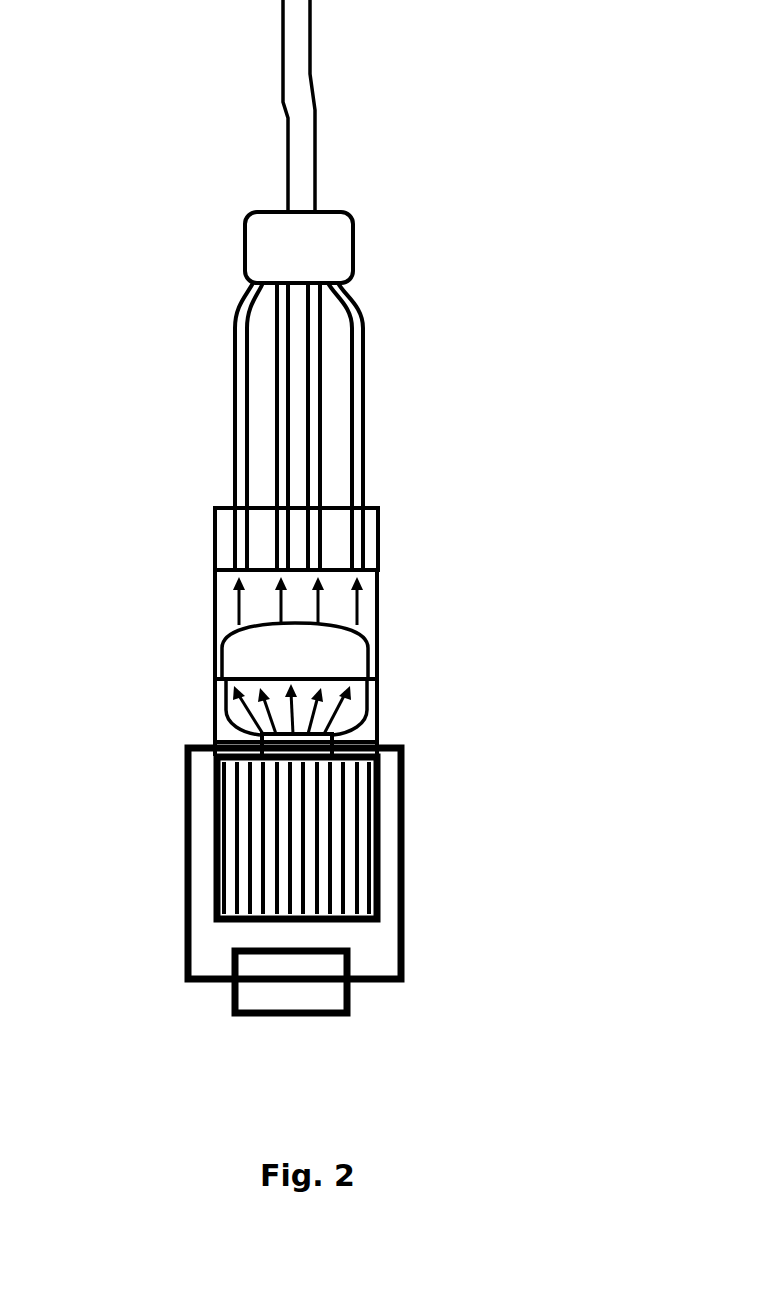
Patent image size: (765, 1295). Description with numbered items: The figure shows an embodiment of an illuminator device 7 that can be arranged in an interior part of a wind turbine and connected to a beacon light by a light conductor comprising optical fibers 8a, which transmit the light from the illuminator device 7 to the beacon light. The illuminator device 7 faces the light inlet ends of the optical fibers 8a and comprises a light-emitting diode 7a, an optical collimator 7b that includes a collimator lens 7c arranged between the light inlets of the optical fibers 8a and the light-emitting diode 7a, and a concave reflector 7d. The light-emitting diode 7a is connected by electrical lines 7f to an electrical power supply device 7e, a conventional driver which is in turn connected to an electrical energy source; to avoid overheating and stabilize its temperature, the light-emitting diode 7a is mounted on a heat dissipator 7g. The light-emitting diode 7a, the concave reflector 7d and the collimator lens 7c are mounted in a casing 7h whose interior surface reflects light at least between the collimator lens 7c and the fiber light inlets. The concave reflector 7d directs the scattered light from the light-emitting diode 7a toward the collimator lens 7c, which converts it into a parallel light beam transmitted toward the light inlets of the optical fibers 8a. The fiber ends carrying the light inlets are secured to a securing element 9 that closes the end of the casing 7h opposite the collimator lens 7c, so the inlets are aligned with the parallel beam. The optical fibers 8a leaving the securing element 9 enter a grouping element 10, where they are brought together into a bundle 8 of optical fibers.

The illuminator device 7 is at (175, 543).
The light-emitting diode 7a is at (340, 738).
The optical collimator 7b is at (213, 598).
The collimator lens 7c is at (335, 655).
The concave reflector 7d is at (212, 725).
The electrical power supply device 7e is at (252, 988).
The electrical lines 7f is at (182, 940).
The heat dissipator 7g is at (212, 818).
The casing 7h is at (212, 628).
The bundle of optical fibers 8 is at (313, 69).
The optical fibers 8a is at (250, 460).
The securing element 9 is at (378, 535).
The grouping element 10 is at (353, 250).